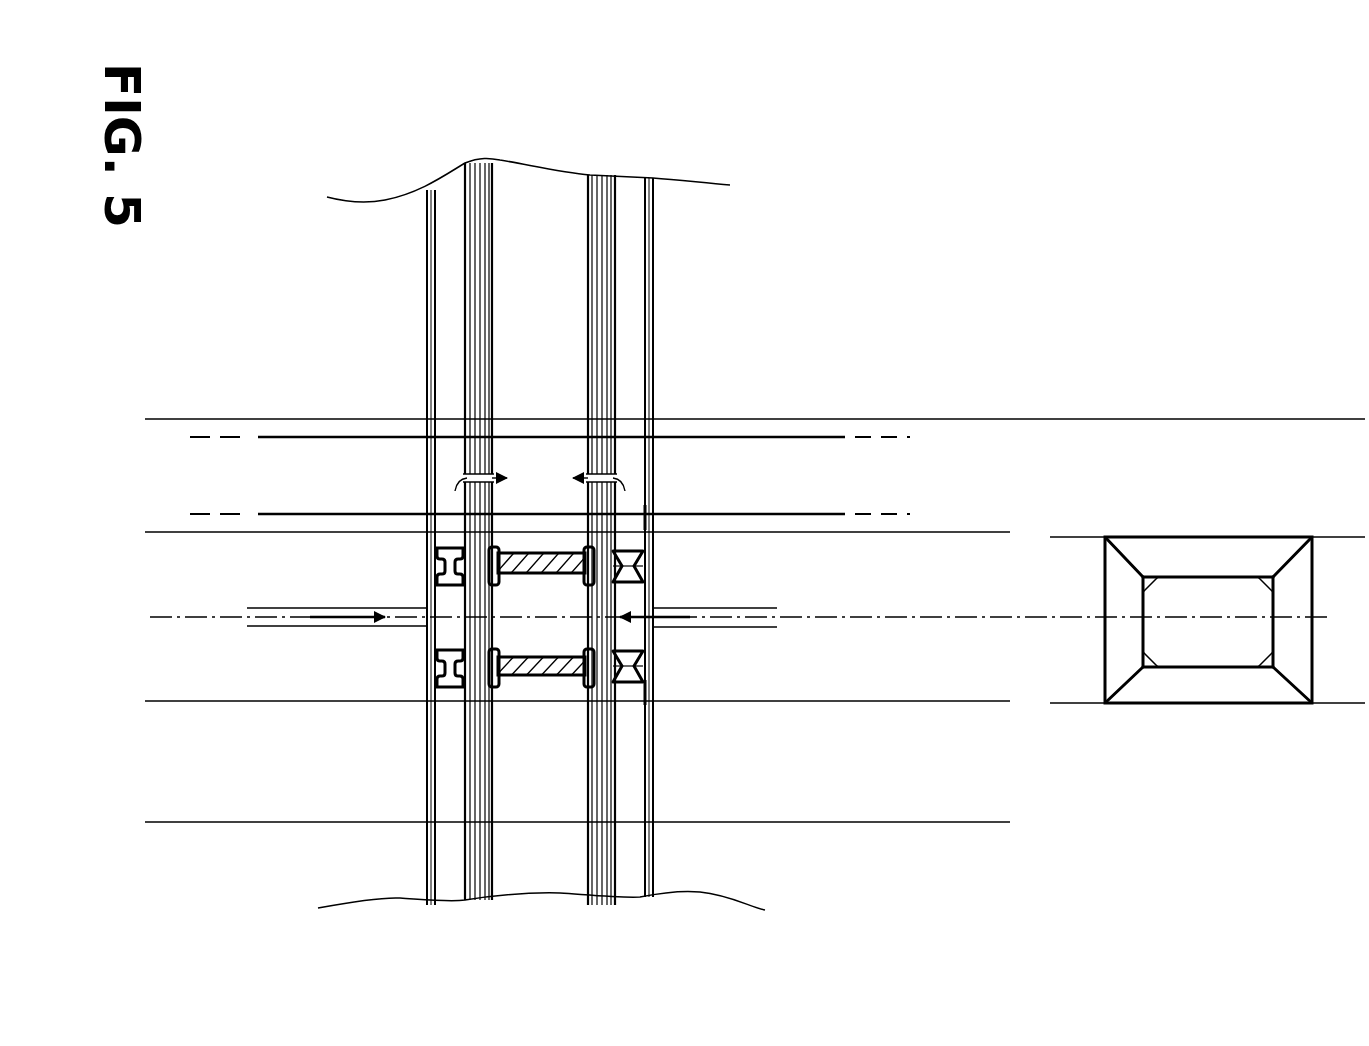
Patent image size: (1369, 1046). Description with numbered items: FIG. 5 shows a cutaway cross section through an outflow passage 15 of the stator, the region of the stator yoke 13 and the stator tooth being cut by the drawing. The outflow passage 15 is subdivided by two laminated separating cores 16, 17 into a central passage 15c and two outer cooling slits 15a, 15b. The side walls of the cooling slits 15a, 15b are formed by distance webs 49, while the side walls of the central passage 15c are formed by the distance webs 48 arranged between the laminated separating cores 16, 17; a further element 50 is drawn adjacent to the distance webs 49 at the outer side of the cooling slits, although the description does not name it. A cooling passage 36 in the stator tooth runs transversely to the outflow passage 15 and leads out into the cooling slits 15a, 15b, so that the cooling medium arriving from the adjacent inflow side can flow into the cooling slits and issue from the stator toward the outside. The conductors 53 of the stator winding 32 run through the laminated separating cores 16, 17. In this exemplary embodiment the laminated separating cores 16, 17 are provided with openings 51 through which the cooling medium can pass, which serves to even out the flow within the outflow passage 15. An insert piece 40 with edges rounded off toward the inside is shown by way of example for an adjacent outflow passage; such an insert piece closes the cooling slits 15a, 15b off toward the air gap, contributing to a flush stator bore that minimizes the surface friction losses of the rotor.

The stator yoke 13 is at (382, 361).
The outflow passage 15 is at (539, 150).
The cooling slit 15a is at (445, 593).
The cooling slit 15b is at (628, 645).
The central passage 15c is at (567, 623).
The laminated separating core 16 is at (477, 298).
The laminated separating core 17 is at (595, 320).
The stator winding 32 is at (962, 458).
The cooling passage 36 is at (288, 620).
The insert piece 40 is at (1182, 687).
The distance web 48 is at (548, 555).
The distance web 49 is at (650, 557).
The support strip 50 is at (650, 518).
The opening 51 is at (473, 472).
The conductor 53 is at (385, 436).